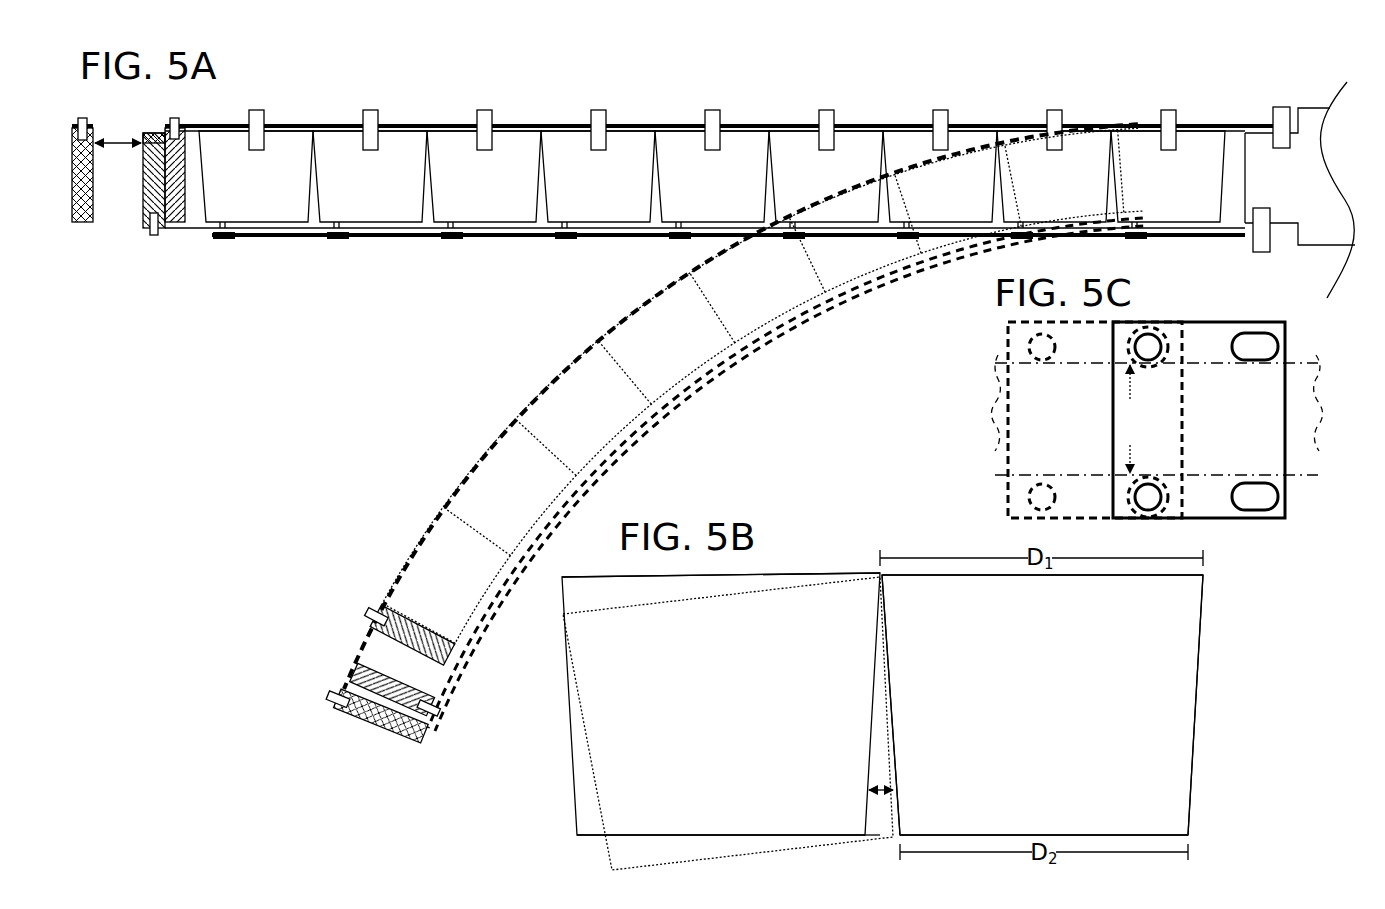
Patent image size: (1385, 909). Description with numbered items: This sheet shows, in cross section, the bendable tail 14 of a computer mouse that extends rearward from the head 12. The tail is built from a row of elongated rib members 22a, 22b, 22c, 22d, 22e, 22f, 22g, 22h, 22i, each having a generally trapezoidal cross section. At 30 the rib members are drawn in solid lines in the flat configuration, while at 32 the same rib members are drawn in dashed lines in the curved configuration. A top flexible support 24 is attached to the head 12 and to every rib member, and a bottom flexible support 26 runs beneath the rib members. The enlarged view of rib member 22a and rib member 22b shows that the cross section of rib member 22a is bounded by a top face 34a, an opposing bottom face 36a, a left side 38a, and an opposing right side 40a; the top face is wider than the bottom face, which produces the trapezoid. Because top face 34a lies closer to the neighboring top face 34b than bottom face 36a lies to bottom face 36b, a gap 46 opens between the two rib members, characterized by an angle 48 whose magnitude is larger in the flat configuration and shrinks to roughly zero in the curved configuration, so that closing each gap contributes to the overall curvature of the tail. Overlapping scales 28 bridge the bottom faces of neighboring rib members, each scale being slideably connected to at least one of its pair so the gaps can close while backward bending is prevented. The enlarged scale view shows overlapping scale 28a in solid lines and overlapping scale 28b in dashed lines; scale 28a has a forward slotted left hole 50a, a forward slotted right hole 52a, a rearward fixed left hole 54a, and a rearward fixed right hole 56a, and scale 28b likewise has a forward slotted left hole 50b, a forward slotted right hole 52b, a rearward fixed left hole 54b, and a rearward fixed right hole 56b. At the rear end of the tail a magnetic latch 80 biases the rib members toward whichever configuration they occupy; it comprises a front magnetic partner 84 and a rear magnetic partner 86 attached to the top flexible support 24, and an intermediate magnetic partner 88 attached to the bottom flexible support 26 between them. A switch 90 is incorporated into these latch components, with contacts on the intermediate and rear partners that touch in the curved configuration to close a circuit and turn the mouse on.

In FIG. 5A, the head 12 is at (1302, 104).
In FIG. 5A, the tail 14 is at (448, 88).
In FIG. 5A, the elongated rib member 22a is at (1150, 193).
In FIG. 5B, the elongated rib member 22a is at (1039, 712).
In FIG. 5A, the elongated rib member 22b is at (1040, 193).
In FIG. 5B, the elongated rib member 22b is at (717, 712).
In FIG. 5A, the elongated rib member 22c is at (930, 203).
In FIG. 5A, the elongated rib member 22d is at (790, 185).
In FIG. 5A, the elongated rib member 22e is at (694, 193).
In FIG. 5A, the elongated rib member 22f is at (581, 193).
In FIG. 5A, the elongated rib member 22g is at (465, 193).
In FIG. 5A, the elongated rib member 22h is at (352, 193).
In FIG. 5A, the elongated rib member 22i is at (239, 193).
In FIG. 5A, the top flexible support 24 is at (752, 122).
In FIG. 5A, the bottom flexible support 26 is at (193, 236).
In FIG. 5C, the bottom flexible support 26 is at (1290, 445).
In FIG. 5A, the overlapping scales 28 is at (552, 302).
In FIG. 5A, the overlapping scale 28a is at (518, 240).
In FIG. 5C, the overlapping scale 28a is at (1214, 434).
In FIG. 5A, the overlapping scale 28b is at (393, 240).
In FIG. 5C, the overlapping scale 28b is at (1095, 420).
In FIG. 5A, the flat configuration 30 is at (310, 252).
In FIG. 5A, the curved configuration 32 is at (521, 366).
In FIG. 5B, the top face 34a is at (1070, 582).
In FIG. 5B, the top face 34b is at (777, 569).
In FIG. 5B, the bottom face 36a is at (1089, 831).
In FIG. 5B, the bottom face 36b is at (715, 832).
In FIG. 5B, the left side 38a is at (898, 744).
In FIG. 5B, the right side 40a is at (1186, 746).
In FIG. 5B, the gap 46 is at (882, 829).
In FIG. 5B, the angle 48 is at (880, 803).
In FIG. 5C, the forward slotted left hole 50a is at (1254, 366).
In FIG. 5C, the forward slotted left hole 50b is at (1133, 394).
In FIG. 5C, the forward slotted right hole 52a is at (1252, 478).
In FIG. 5C, the forward slotted right hole 52b is at (1133, 446).
In FIG. 5C, the rearward fixed left hole 54a is at (1148, 362).
In FIG. 5C, the rearward fixed left hole 54b is at (1040, 366).
In FIG. 5C, the rearward fixed right hole 56a is at (1148, 440).
In FIG. 5C, the rearward fixed right hole 56b is at (1044, 481).
In FIG. 5A, the latch 80 is at (118, 256).
In FIG. 5A, the front magnetic partner 84 is at (181, 148).
In FIG. 5A, the rear magnetic partner 86 is at (78, 224).
In FIG. 5A, the intermediate magnetic partner 88 is at (143, 191).
In FIG. 5A, the switch 90 is at (355, 642).